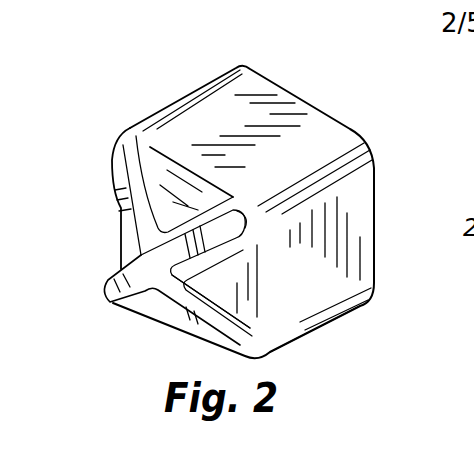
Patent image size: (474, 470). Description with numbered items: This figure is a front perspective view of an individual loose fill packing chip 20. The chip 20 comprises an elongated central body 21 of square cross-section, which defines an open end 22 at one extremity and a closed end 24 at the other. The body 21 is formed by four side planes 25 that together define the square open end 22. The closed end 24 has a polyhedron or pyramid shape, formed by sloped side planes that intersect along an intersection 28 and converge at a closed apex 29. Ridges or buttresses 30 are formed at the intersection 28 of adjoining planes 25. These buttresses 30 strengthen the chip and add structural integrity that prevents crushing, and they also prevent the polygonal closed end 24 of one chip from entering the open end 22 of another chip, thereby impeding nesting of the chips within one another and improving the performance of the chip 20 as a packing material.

The packing chip 20 is at (340, 117).
The elongated central body 21 is at (299, 346).
The open end 22 is at (374, 204).
The closed end 24 is at (112, 248).
The side planes 25 is at (258, 88).
The intersection 28 is at (112, 168).
The closed apex 29 is at (161, 280).
The buttresses 30 is at (148, 211).